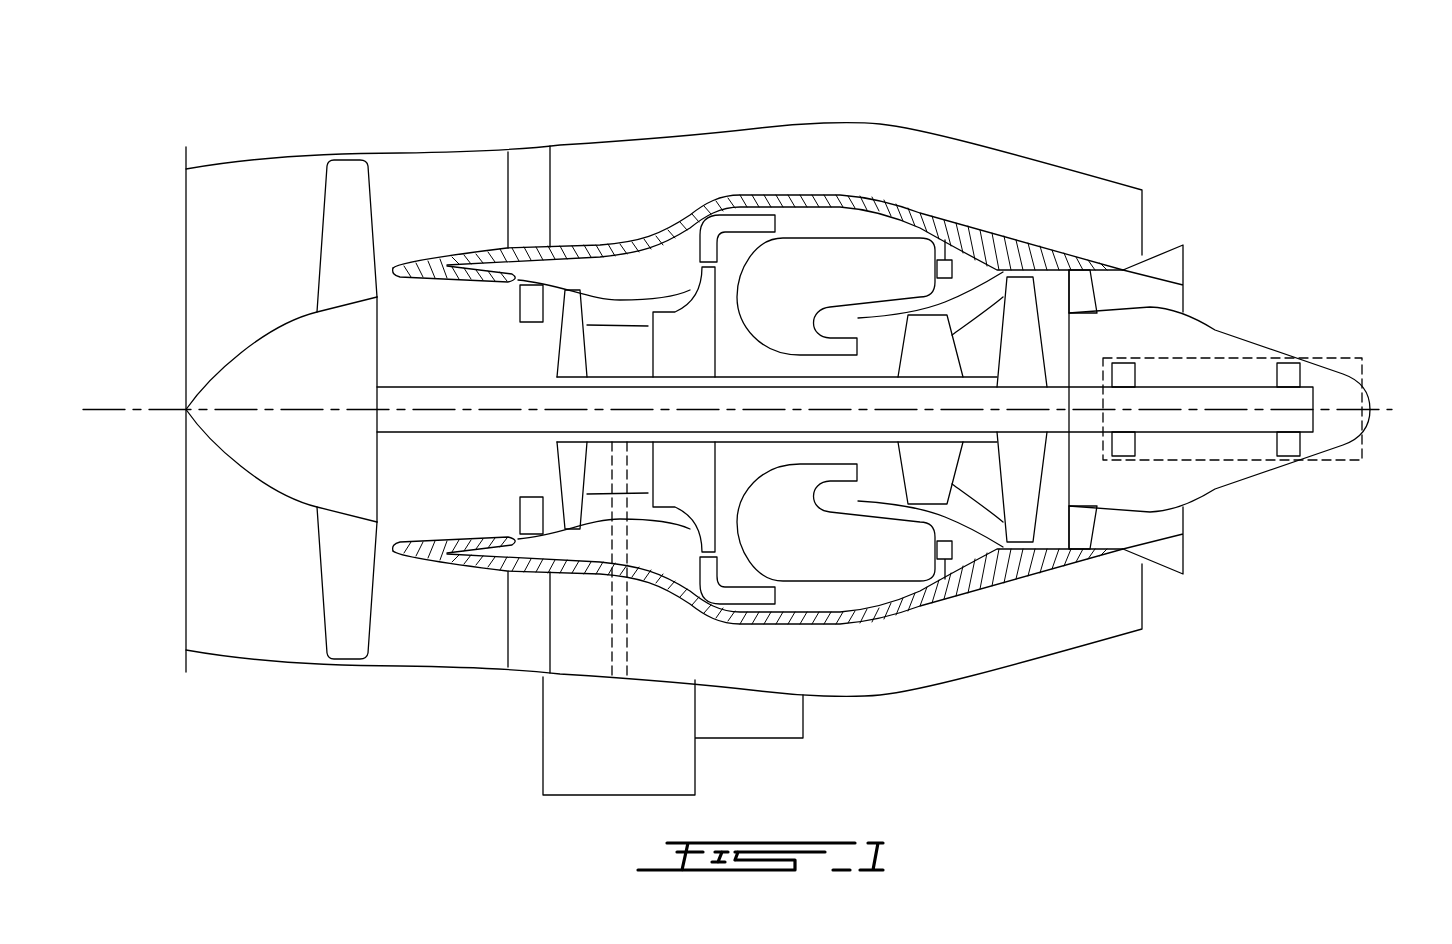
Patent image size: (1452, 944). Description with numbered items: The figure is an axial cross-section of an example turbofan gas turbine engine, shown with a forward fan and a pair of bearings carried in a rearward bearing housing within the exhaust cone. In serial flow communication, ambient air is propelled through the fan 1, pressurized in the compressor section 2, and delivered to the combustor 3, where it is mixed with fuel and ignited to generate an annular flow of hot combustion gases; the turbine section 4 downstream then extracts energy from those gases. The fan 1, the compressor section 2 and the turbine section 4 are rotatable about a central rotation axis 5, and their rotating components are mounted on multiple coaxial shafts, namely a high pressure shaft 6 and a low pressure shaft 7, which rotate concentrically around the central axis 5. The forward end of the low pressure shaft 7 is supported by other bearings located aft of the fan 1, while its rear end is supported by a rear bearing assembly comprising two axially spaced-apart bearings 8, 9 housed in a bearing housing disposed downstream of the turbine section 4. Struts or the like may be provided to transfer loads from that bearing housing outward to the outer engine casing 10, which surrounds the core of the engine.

The fan 1 is at (338, 202).
The compressor section 2 is at (676, 333).
The combustor 3 is at (838, 262).
The turbine section 4 is at (1018, 332).
The central rotation axis 5 is at (122, 408).
The high pressure shaft 6 is at (792, 443).
The low pressure shaft 7 is at (1068, 440).
The bearing 8 is at (1124, 363).
The bearing 9 is at (1288, 363).
The outer engine casing 10 is at (920, 213).